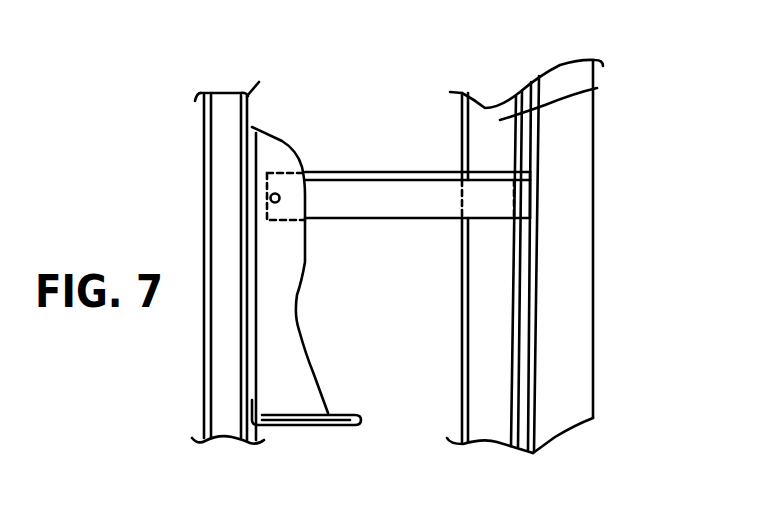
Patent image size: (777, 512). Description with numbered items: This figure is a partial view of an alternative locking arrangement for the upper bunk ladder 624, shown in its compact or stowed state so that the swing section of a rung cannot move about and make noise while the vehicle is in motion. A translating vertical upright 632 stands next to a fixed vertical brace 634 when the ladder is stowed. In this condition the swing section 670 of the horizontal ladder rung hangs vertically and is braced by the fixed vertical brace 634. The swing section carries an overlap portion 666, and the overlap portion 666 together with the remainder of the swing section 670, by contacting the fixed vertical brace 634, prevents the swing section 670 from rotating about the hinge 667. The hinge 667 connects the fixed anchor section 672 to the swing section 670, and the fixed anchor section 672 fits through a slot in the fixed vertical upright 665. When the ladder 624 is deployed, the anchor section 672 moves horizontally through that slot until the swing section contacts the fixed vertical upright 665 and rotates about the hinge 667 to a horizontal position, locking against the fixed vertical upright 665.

The ladder 624 is at (597, 88).
The translating vertical upright 632 is at (596, 155).
The fixed vertical brace 634 is at (230, 446).
The fixed vertical upright 665 is at (477, 443).
The overlap portion 666 is at (284, 139).
The hinge 667 is at (278, 194).
The swing section 670 is at (310, 443).
The fixed anchor section 672 is at (400, 173).